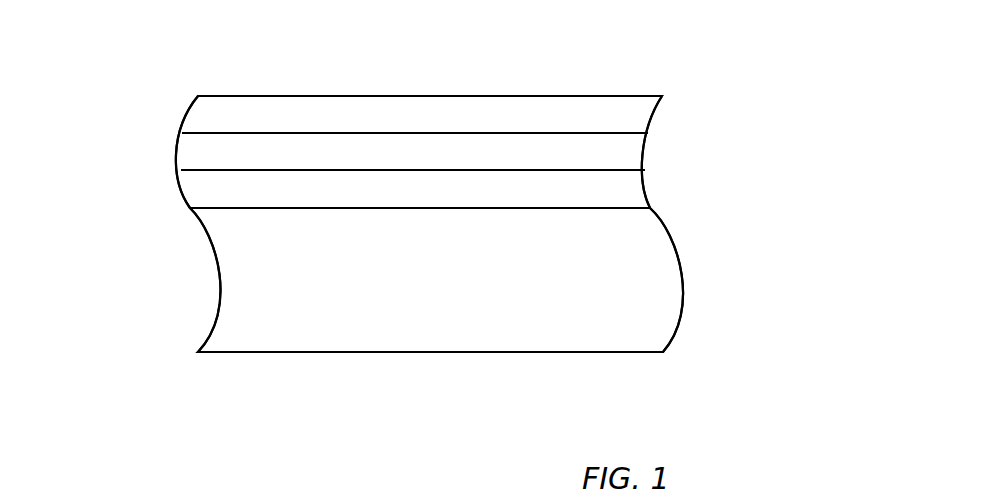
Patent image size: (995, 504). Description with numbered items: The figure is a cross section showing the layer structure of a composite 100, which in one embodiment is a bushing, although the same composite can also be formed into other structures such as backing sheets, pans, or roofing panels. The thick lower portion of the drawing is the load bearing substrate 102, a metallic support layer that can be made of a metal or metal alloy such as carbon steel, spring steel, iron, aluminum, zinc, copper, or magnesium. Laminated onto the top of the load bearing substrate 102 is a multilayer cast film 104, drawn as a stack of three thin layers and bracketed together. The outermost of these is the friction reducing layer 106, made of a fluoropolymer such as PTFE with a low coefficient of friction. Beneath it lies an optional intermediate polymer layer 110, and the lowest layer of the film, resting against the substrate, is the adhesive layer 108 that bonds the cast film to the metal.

The composite 100 is at (627, 81).
The load bearing substrate 102 is at (657, 290).
The multilayer cast film 104 is at (678, 95).
The friction reducing layer 106 is at (205, 111).
The adhesive layer 108 is at (210, 195).
The intermediate polymer layer 110 is at (200, 153).